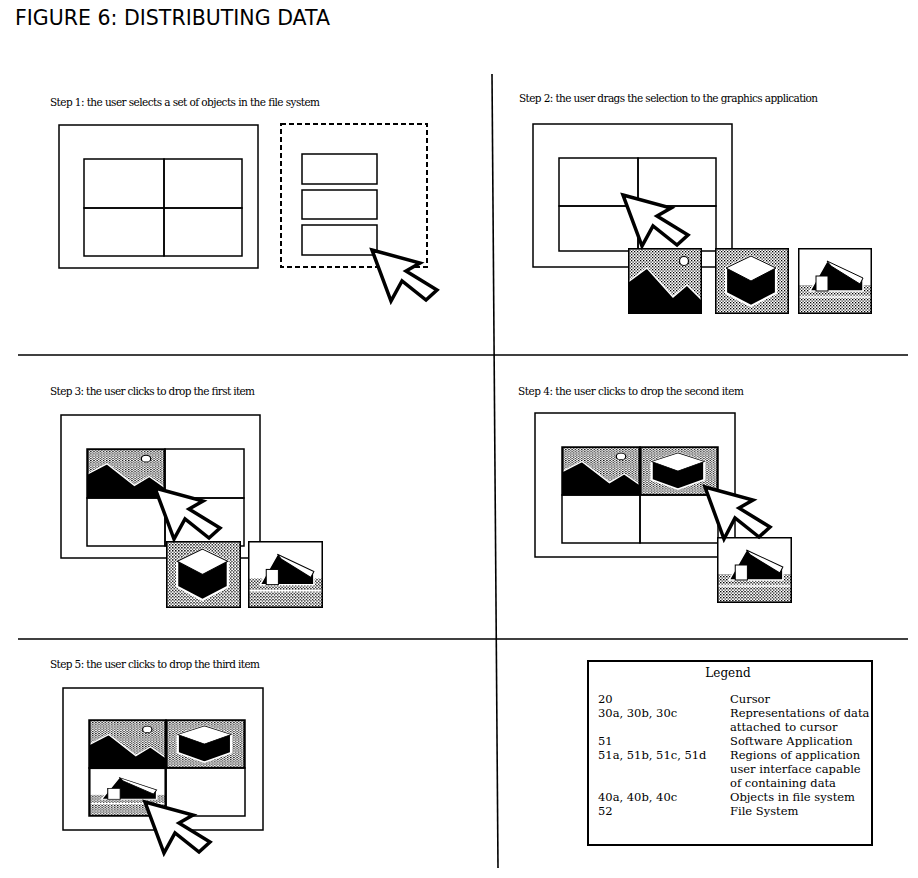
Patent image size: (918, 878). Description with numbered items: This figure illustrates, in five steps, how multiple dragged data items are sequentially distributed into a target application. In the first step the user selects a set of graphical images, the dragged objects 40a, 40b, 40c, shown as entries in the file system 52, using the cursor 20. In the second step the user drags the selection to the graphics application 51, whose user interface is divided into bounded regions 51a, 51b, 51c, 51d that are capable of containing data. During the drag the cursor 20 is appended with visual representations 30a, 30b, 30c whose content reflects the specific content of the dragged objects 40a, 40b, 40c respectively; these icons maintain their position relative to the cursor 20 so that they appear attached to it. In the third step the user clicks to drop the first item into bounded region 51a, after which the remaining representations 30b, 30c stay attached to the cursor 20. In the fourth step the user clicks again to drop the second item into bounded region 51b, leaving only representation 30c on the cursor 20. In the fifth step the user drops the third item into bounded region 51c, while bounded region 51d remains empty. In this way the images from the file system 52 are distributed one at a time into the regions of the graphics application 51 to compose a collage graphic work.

The cursor 20 is at (383, 278).
The visual representation 30a is at (637, 316).
The visual representation 30b is at (724, 316).
The visual representation 30c is at (807, 316).
The graphics application 51 is at (146, 270).
The bounded region 51a is at (111, 448).
The bounded region 51b is at (680, 446).
The bounded region 51c is at (88, 779).
The bounded region 51d is at (441, 511).
The dragged object 40a is at (378, 172).
The dragged object 40b is at (378, 207).
The dragged object 40c is at (378, 242).
The file system 52 is at (326, 270).